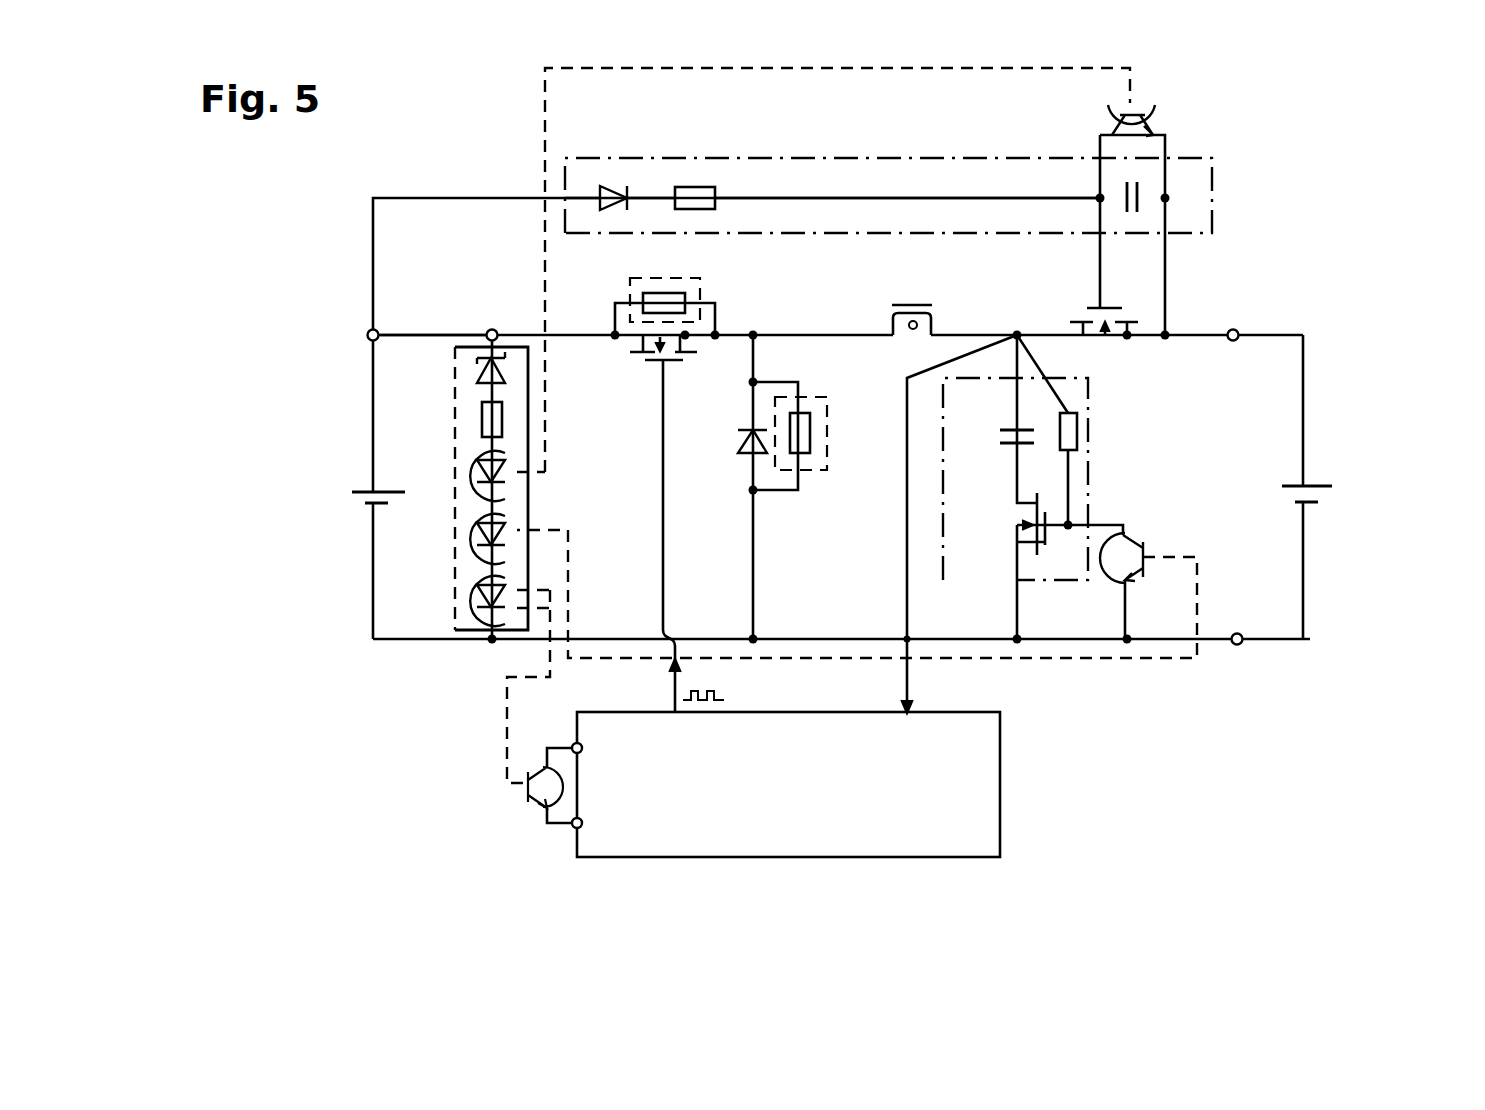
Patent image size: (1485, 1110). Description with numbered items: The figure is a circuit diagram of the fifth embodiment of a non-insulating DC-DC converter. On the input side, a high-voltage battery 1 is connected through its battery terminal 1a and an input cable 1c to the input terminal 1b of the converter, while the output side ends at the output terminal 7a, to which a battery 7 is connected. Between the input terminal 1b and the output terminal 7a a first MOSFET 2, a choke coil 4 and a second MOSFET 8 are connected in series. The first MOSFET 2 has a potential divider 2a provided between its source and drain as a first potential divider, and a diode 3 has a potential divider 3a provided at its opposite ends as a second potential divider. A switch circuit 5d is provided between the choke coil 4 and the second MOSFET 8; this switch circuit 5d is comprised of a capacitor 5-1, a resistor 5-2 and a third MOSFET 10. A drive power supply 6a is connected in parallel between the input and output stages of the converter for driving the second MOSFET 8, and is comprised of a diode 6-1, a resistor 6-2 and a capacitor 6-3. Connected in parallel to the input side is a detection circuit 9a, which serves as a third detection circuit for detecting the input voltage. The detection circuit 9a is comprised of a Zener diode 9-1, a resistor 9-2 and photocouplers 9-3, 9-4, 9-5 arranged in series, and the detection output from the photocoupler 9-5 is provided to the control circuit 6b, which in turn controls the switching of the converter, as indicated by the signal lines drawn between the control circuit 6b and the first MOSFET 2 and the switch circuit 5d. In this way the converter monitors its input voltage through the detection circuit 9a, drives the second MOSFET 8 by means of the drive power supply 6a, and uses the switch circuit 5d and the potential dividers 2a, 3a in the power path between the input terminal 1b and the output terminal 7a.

The high-voltage battery 1 is at (362, 487).
The battery terminal 1a is at (370, 330).
The input terminal 1b is at (493, 330).
The input cable 1c is at (407, 333).
The first MOSFET 2 is at (687, 364).
The potential divider 2a is at (698, 278).
The diode 3 is at (740, 438).
The potential divider 3a is at (827, 428).
The choke coil 4 is at (910, 310).
The capacitor 5-1 is at (1000, 440).
The resistor 5-2 is at (1080, 440).
The switch circuit 5d is at (1088, 498).
The diode 6-1 is at (613, 187).
The resistor 6-2 is at (700, 188).
The capacitor 6-3 is at (1133, 177).
The drive power supply 6a is at (940, 158).
The control circuit 6b is at (778, 858).
The battery 7 is at (1322, 486).
The output terminal 7a is at (1236, 330).
The second MOSFET 8 is at (1112, 340).
The Zener diode 9-1 is at (510, 373).
The resistor 9-2 is at (505, 412).
The photocoupler 9-3 is at (508, 490).
The photocoupler 9-4 is at (512, 545).
The photocoupler 9-5 is at (517, 607).
The detection circuit 9a is at (458, 625).
The third MOSFET 10 is at (1013, 510).